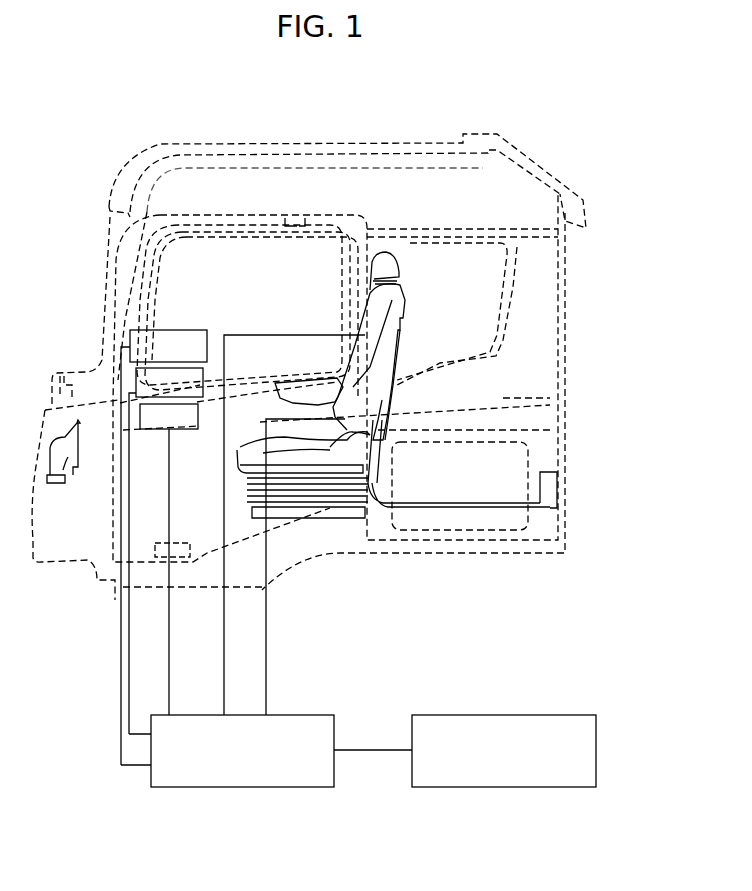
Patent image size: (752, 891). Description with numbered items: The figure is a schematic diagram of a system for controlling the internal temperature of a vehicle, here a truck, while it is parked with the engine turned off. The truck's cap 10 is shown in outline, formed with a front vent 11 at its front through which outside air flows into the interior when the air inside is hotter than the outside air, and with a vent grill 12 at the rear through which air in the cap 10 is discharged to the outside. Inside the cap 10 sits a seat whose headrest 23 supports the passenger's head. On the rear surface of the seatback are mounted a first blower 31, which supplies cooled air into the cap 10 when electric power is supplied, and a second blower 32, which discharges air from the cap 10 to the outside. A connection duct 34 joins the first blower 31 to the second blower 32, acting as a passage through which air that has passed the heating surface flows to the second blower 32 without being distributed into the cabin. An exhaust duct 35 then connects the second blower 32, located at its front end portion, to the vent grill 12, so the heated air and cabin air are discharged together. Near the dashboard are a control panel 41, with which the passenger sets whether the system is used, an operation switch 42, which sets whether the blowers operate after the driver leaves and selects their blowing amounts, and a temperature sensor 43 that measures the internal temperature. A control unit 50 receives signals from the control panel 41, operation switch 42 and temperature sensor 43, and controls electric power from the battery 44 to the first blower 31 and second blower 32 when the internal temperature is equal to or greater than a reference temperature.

The cap 10 is at (495, 152).
The front vent 11 is at (50, 483).
The vent grill 12 is at (552, 490).
The headrest 23 is at (383, 267).
The first blower 31 is at (405, 322).
The second blower 32 is at (390, 427).
The connection duct 34 is at (388, 387).
The exhaust duct 35 is at (443, 507).
The control panel 41 is at (177, 337).
The operation switch 42 is at (203, 377).
The temperature sensor 43 is at (197, 402).
The battery 44 is at (505, 787).
The control unit 50 is at (245, 787).